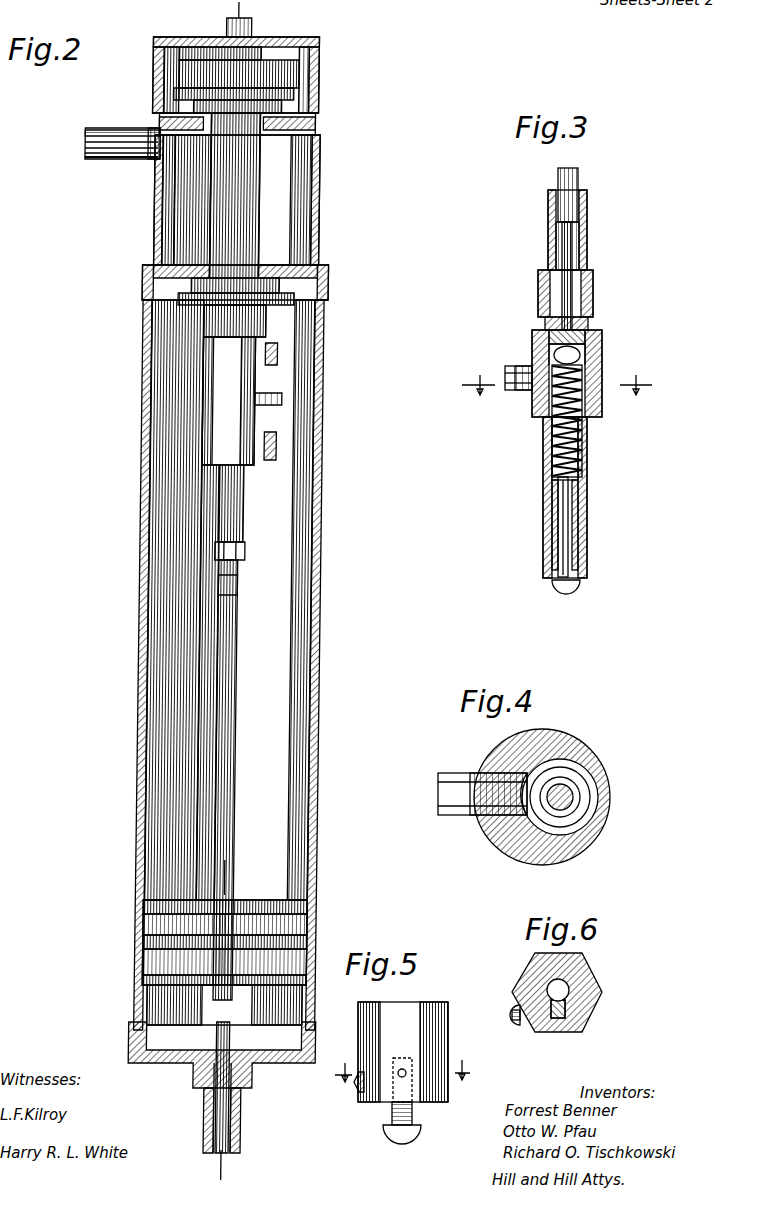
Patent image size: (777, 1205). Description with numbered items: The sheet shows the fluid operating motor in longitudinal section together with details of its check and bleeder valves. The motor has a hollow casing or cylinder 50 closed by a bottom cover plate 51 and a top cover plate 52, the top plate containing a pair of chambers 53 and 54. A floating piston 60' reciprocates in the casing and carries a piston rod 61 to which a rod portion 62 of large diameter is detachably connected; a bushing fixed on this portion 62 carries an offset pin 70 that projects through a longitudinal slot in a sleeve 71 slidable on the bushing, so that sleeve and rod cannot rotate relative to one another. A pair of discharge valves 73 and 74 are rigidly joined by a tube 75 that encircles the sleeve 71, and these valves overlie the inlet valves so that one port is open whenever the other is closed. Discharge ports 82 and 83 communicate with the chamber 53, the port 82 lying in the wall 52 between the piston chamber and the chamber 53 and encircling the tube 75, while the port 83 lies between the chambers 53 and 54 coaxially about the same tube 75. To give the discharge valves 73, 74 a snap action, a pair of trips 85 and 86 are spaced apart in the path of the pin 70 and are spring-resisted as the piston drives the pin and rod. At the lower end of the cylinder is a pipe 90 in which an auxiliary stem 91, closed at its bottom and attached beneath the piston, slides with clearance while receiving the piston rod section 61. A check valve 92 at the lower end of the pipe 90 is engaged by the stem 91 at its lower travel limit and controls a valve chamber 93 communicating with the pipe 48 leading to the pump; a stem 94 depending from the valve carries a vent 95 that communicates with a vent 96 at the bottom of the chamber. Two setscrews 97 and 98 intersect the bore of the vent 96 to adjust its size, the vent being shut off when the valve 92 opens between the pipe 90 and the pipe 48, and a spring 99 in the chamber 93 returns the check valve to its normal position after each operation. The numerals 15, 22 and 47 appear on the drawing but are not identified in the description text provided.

In FIG. 2, the pump rod 15 is at (222, 8).
In FIG. 2, the axis center line 22 is at (218, 883).
In FIG. 2, the inlet pipe 47 is at (112, 128).
In FIG. 3, the pipe 48 is at (526, 366).
In FIG. 4, the pipe 48 is at (465, 775).
In FIG. 2, the casing 50 is at (312, 592).
In FIG. 2, the bottom cover plate 51 is at (176, 1066).
In FIG. 2, the top cover plate 52 is at (297, 262).
In FIG. 2, the chamber 53 is at (302, 203).
In FIG. 2, the chamber 54 is at (300, 96).
In FIG. 2, the piston 60' is at (242, 952).
In FIG. 2, the piston rod 61 is at (233, 836).
In FIG. 2, the rod portion 62 is at (236, 548).
In FIG. 2, the offset pin 70 is at (287, 398).
In FIG. 2, the sleeve 71 is at (224, 395).
In FIG. 2, the discharge valve 73 is at (272, 88).
In FIG. 2, the discharge valve 74 is at (294, 306).
In FIG. 2, the tube 75 is at (260, 182).
In FIG. 2, the discharge port 82 is at (205, 268).
In FIG. 2, the discharge port 83 is at (313, 143).
In FIG. 2, the trip 85 is at (282, 452).
In FIG. 2, the trip 86 is at (282, 357).
In FIG. 2, the pipe 90 is at (250, 1132).
In FIG. 3, the pipe 90 is at (584, 225).
In FIG. 2, the auxiliary stem 91 is at (244, 1118).
In FIG. 3, the auxiliary stem 91 is at (575, 186).
In FIG. 3, the check valve 92 is at (572, 268).
In FIG. 3, the valve chamber 93 is at (553, 430).
In FIG. 4, the valve chamber 93 is at (588, 790).
In FIG. 3, the stem 94 is at (580, 442).
In FIG. 4, the stem 94 is at (566, 793).
In FIG. 3, the vent 95 is at (588, 491).
In FIG. 3, the vent 96 is at (570, 558).
In FIG. 5, the vent 96 is at (404, 1069).
In FIG. 6, the vent 96 is at (558, 1020).
In FIG. 5, the setscrew 97 is at (392, 1138).
In FIG. 6, the setscrew 97 is at (566, 1012).
In FIG. 5, the setscrew 98 is at (358, 1088).
In FIG. 6, the setscrew 98 is at (513, 1024).
In FIG. 3, the spring 99 is at (580, 370).